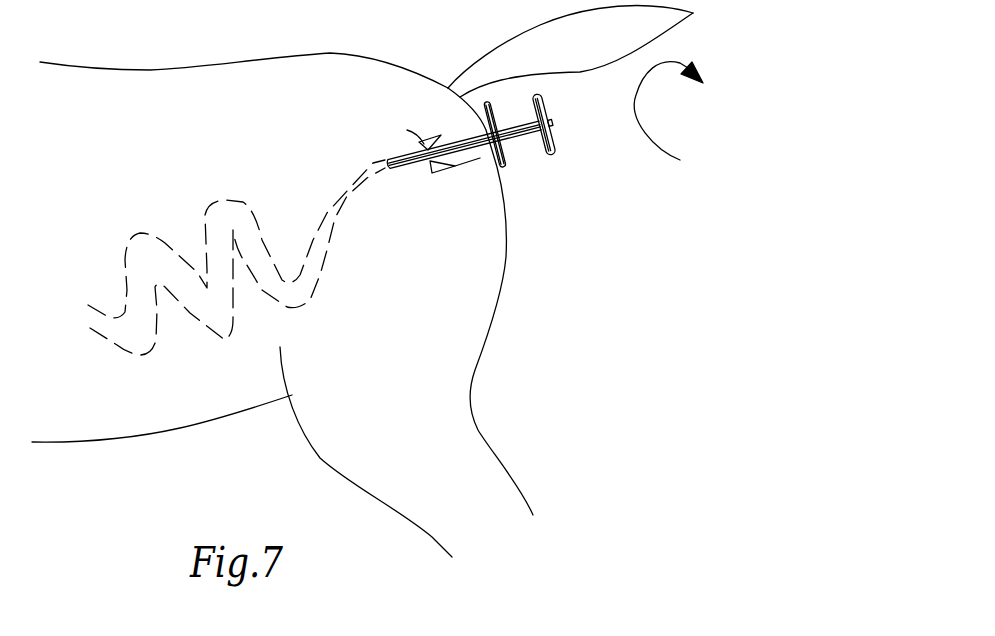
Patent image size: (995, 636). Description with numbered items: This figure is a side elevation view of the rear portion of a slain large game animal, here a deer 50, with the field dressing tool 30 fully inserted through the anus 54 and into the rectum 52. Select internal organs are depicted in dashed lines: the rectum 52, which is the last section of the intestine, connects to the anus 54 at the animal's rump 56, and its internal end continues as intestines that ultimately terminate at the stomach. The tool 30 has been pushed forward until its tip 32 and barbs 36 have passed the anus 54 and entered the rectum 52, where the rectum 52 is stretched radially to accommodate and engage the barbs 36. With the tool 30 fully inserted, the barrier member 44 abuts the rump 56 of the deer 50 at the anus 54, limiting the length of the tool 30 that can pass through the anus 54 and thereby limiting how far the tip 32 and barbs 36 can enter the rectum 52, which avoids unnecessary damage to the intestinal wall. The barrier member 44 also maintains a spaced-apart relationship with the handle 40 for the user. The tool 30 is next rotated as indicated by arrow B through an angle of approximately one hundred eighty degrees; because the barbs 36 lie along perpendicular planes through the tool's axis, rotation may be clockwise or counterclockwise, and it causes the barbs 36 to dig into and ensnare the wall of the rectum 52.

The field dressing tool 30 is at (502, 125).
The tip 32 is at (407, 166).
The barbs 36 is at (407, 130).
The handle 40 is at (556, 126).
The barrier member 44 is at (488, 105).
The deer 50 is at (216, 63).
The rectum 52 is at (362, 173).
The anus 54 is at (487, 122).
The rump 56 is at (506, 184).
The arrow B is at (665, 159).